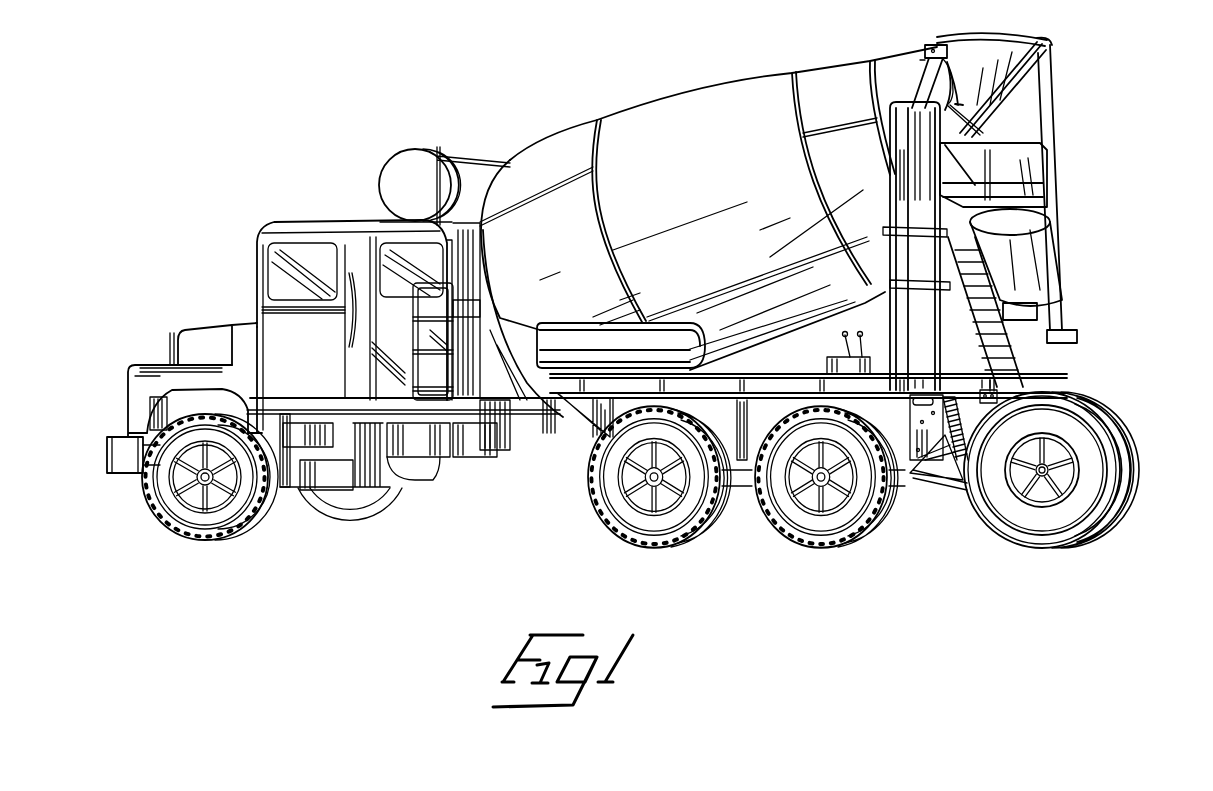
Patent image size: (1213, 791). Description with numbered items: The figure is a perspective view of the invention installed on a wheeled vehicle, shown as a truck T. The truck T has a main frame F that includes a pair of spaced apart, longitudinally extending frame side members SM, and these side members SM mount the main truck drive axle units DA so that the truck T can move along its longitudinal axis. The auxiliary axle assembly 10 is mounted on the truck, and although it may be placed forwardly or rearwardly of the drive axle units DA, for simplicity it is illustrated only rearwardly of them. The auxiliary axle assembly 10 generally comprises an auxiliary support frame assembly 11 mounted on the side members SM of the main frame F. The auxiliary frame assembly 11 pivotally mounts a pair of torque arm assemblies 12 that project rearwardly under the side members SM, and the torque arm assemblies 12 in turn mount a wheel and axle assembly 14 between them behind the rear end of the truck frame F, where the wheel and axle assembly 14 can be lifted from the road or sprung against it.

The truck T is at (268, 201).
The main frame F is at (496, 473).
The frame side members SM is at (526, 443).
The drive axle units DA is at (765, 546).
The auxiliary axle assembly 10 is at (1116, 381).
The auxiliary support frame assembly 11 is at (968, 396).
The torque arm assemblies 12 is at (955, 502).
The wheel and axle assembly 14 is at (1160, 441).